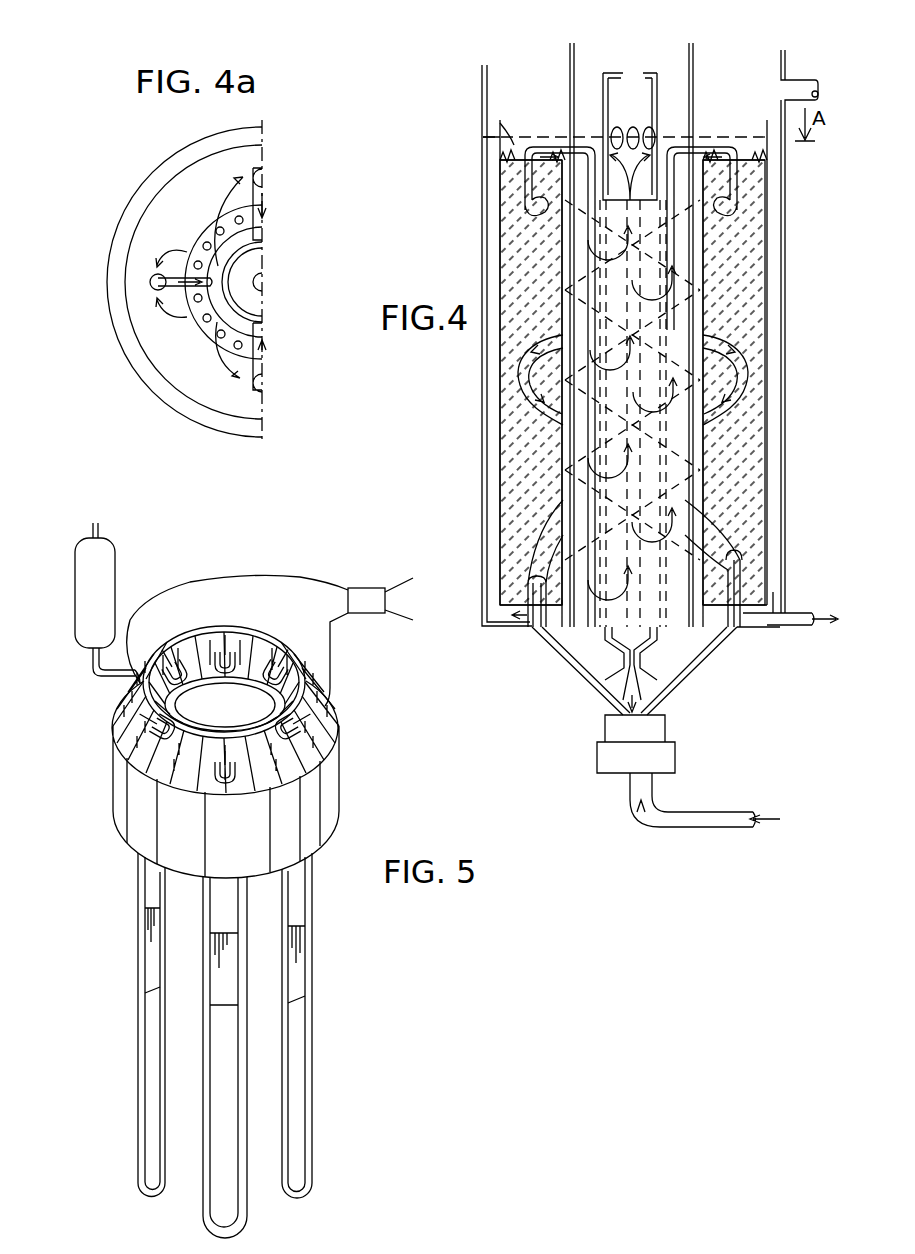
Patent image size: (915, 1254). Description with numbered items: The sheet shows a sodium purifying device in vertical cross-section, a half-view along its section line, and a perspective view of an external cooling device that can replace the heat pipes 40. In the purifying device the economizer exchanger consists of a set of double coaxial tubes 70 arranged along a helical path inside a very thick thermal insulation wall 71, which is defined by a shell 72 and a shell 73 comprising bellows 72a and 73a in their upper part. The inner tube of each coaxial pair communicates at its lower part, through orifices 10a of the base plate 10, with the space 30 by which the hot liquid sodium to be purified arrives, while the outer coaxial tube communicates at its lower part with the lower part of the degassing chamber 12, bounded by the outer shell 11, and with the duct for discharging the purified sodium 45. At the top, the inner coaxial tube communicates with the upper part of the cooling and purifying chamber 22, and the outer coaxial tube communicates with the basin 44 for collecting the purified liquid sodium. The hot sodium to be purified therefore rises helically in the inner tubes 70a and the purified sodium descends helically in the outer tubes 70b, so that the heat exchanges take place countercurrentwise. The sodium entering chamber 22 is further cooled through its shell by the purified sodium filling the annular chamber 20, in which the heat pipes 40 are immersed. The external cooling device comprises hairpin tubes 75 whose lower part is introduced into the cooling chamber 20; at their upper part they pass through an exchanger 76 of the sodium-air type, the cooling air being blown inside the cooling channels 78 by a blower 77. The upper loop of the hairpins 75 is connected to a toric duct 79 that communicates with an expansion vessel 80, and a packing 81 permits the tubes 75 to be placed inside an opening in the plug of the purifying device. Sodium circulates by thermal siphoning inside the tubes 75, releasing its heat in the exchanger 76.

In FIG. 4, the base plate 10 is at (780, 627).
In FIG. 4, the orifices 10a is at (738, 630).
In FIG. 4, the shell 11 is at (787, 535).
In FIG. 4, the first annular chamber 12 is at (776, 453).
In FIG. 4, the first annular chamber of the inner part 20 is at (703, 262).
In FIG. 4, the cooling and purifying chamber 22 is at (585, 398).
In FIG. 4, the space 30 is at (688, 668).
In FIG. 4, the heat pipes 40 is at (690, 72).
In FIG. 4, the collecting basin 44 is at (507, 130).
In FIG. 4, the duct for discharging the purified sodium 45 is at (800, 607).
In FIG. 4, the double coaxial tubes 70 is at (740, 520).
In FIG. 4a, the inner tubes 70a is at (187, 307).
In FIG. 4a, the outer tubes 70b is at (156, 288).
In FIG. 4, the thermal insulation wall 71 is at (766, 287).
In FIG. 4, the shell 72 is at (767, 340).
In FIG. 4, the bellows 72a is at (760, 165).
In FIG. 4, the shell 73 is at (703, 432).
In FIG. 4, the bellows 73a is at (705, 183).
In FIG. 5, the hairpin tubes 75 is at (312, 1057).
In FIG. 5, the exchanger 76 is at (310, 817).
In FIG. 5, the blower 77 is at (362, 597).
In FIG. 5, the cooling channels 78 is at (327, 707).
In FIG. 5, the toric duct 79 is at (205, 632).
In FIG. 5, the expansion vessel 80 is at (103, 687).
In FIG. 5, the packing 81 is at (296, 943).